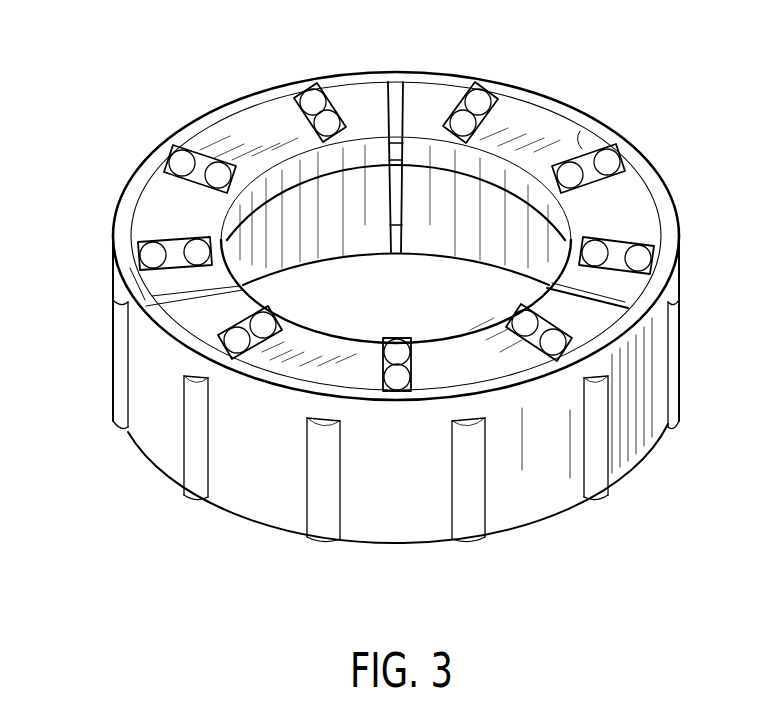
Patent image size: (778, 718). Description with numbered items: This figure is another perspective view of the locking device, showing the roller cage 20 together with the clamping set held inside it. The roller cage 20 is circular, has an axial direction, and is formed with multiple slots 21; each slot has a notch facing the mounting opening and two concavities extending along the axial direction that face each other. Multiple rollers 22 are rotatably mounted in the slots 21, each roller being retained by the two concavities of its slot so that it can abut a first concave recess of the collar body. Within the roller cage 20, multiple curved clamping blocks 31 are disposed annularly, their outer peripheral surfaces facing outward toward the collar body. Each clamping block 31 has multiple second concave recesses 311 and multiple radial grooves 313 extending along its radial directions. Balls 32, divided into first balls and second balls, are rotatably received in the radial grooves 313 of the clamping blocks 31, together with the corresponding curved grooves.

The roller cage 20 is at (150, 477).
The slots 21 is at (477, 500).
The rollers 22 is at (323, 528).
The clamping blocks 31 is at (247, 123).
The balls 32 is at (313, 100).
The second concave recesses 311 is at (148, 283).
The radial grooves 313 is at (583, 140).